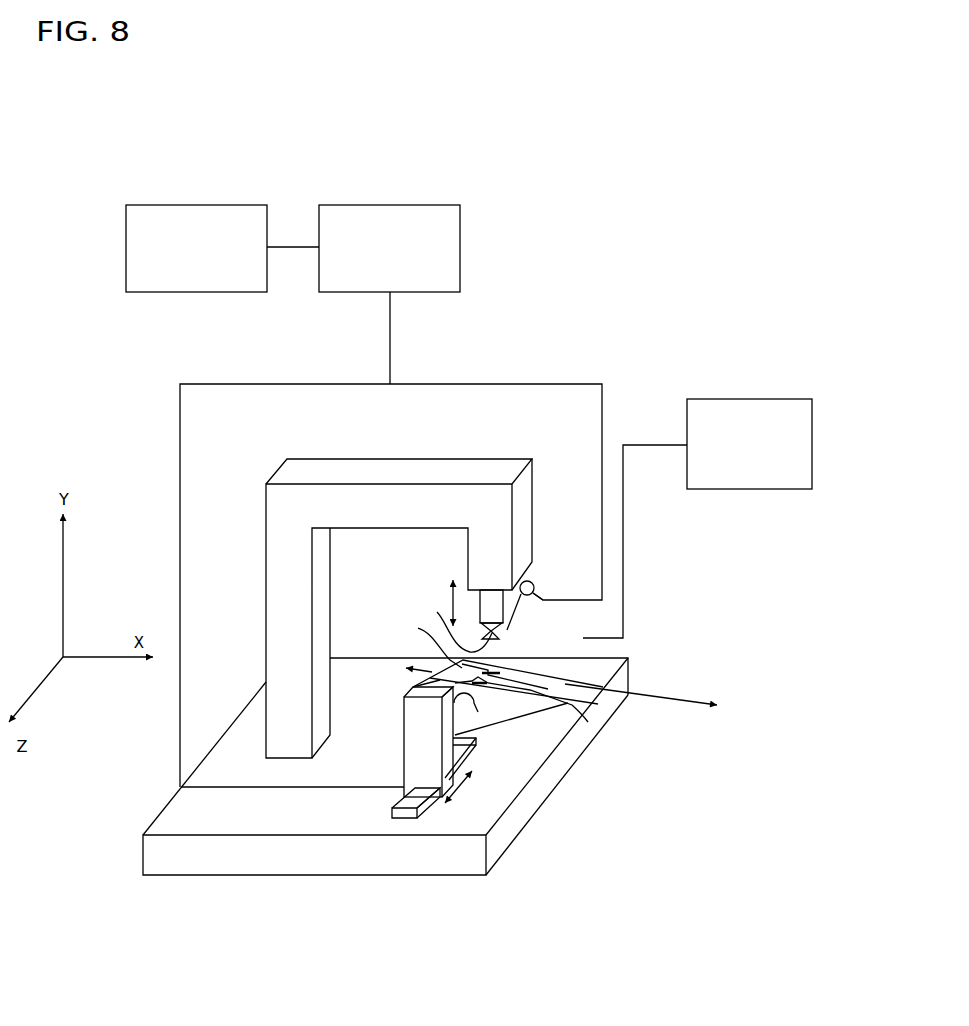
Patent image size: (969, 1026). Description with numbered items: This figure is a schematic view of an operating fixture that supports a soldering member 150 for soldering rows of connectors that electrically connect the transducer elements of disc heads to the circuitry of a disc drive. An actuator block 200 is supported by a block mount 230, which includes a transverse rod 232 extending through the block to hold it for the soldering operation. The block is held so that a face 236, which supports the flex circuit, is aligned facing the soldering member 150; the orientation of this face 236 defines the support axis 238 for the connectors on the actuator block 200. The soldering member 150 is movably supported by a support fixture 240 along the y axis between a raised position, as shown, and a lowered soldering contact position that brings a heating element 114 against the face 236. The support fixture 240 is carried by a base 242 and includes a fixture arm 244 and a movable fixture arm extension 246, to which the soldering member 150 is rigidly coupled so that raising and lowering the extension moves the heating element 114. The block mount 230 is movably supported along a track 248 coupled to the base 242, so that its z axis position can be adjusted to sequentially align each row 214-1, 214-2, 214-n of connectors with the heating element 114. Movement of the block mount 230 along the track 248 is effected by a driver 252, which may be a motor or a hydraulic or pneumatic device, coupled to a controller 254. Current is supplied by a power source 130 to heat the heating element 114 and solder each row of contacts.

The controller 254 is at (203, 212).
The driver 252 is at (428, 207).
The power source 130 is at (753, 403).
The support fixture 240 is at (482, 466).
The fixture arm 244 is at (307, 470).
The movable fixture arm extension 246 is at (534, 587).
The soldering member 150 is at (508, 633).
The heating element 114 is at (450, 622).
The face 236 is at (425, 640).
The actuator block 200 is at (585, 685).
The support axis 238 is at (652, 695).
The first row of connectors 214-1 is at (502, 670).
The second row of connectors 214-2 is at (413, 687).
The nth row of connectors 214-n is at (588, 722).
The block mount 230 is at (410, 737).
The transverse rod 232 is at (461, 719).
The track 248 is at (402, 803).
The base 242 is at (261, 826).